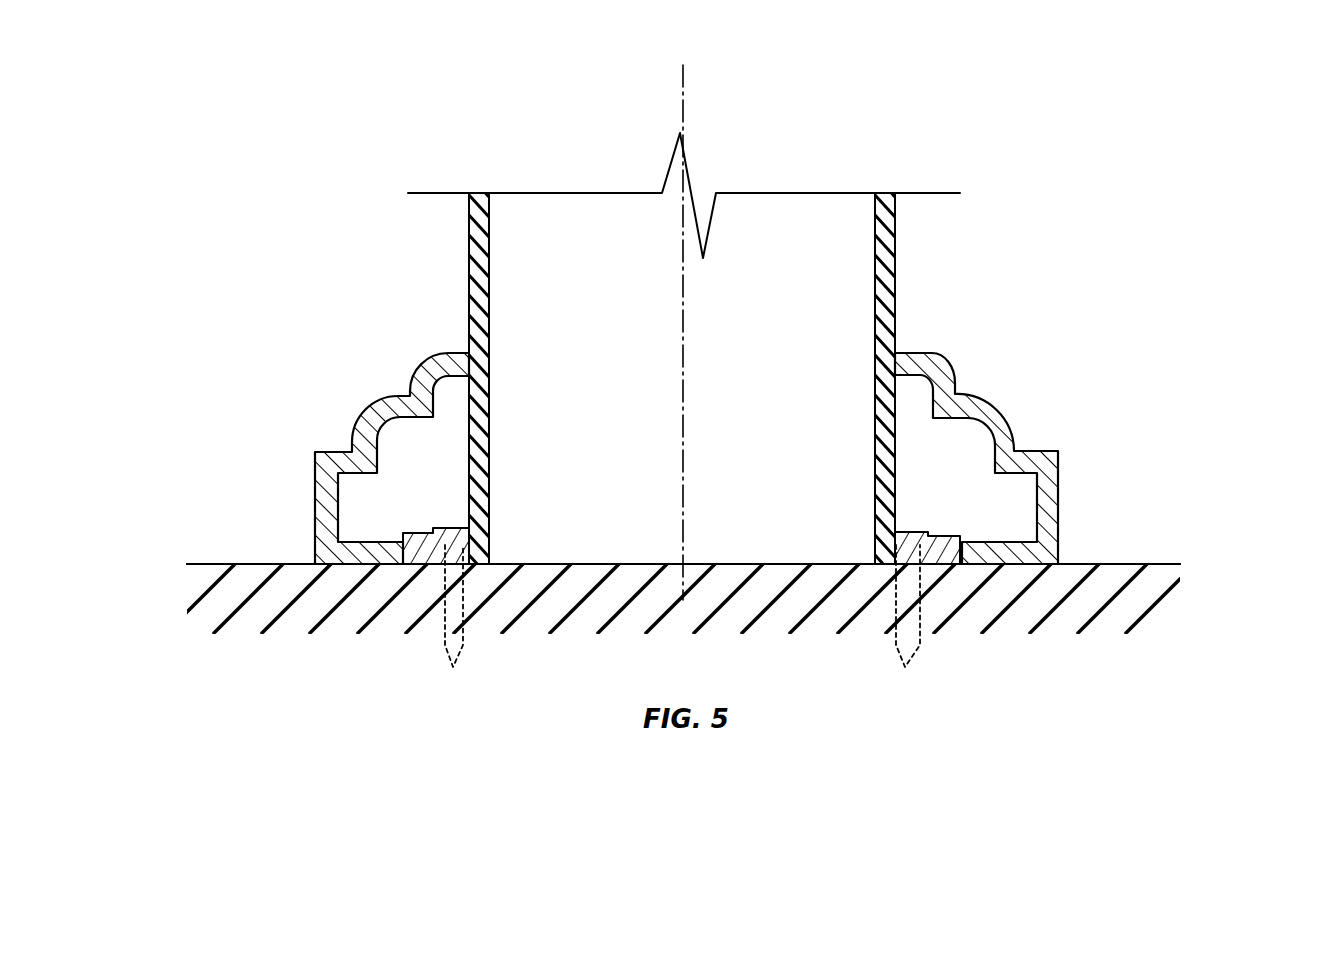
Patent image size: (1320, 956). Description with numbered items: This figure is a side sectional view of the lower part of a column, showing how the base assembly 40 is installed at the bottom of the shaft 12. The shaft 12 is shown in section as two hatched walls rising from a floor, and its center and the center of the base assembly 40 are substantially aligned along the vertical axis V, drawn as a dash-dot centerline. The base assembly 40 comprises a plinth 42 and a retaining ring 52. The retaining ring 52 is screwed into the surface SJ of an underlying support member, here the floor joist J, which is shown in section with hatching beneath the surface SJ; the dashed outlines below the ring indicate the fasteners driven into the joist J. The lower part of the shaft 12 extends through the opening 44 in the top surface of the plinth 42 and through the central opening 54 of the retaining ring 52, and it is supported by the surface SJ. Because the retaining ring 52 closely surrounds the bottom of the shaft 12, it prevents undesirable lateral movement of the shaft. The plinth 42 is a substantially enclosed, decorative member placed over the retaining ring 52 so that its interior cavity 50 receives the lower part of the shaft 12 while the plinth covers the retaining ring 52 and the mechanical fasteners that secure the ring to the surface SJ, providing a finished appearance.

The shaft 12 is at (895, 260).
The base assembly 40 is at (1147, 310).
The plinth 42 is at (985, 400).
The opening 44 is at (468, 352).
The interior cavity 50 is at (941, 460).
The retaining ring 52 is at (413, 532).
The central opening 54 is at (845, 548).
The vertical axis V is at (685, 103).
The surface of the underlying support member SJ is at (240, 563).
The floor joist J is at (267, 598).